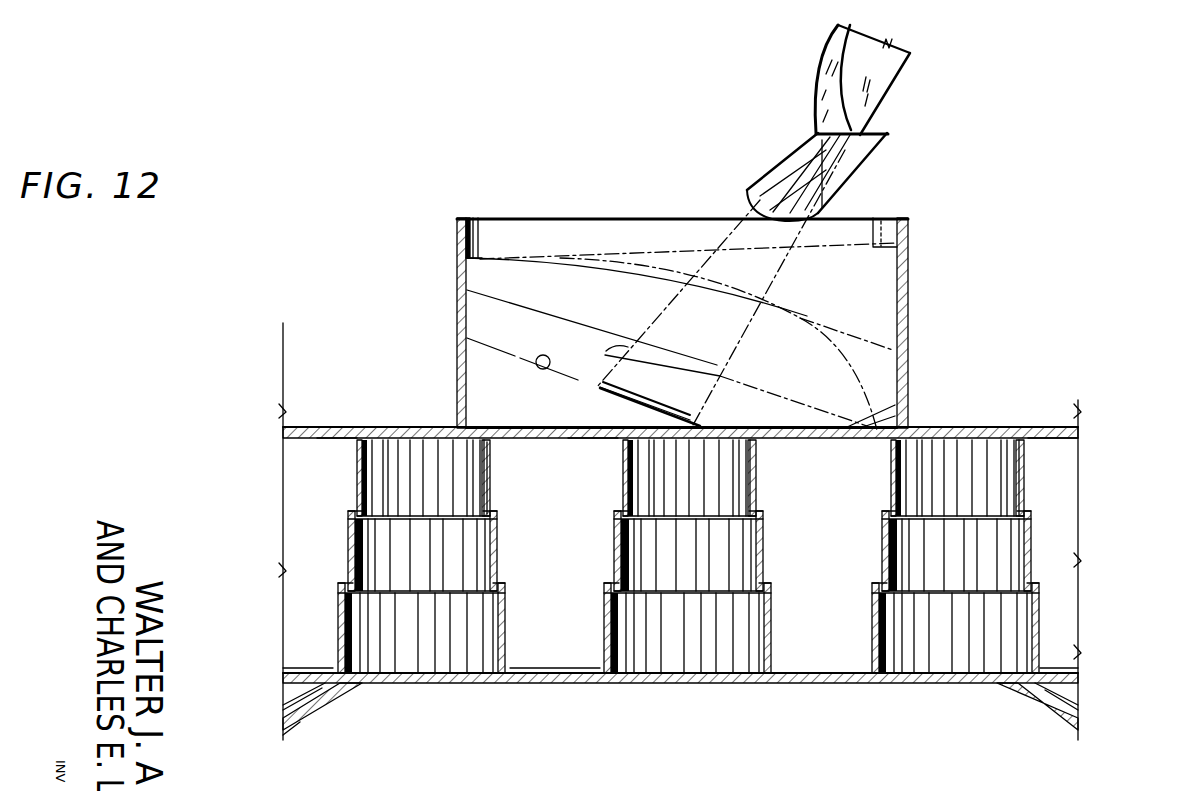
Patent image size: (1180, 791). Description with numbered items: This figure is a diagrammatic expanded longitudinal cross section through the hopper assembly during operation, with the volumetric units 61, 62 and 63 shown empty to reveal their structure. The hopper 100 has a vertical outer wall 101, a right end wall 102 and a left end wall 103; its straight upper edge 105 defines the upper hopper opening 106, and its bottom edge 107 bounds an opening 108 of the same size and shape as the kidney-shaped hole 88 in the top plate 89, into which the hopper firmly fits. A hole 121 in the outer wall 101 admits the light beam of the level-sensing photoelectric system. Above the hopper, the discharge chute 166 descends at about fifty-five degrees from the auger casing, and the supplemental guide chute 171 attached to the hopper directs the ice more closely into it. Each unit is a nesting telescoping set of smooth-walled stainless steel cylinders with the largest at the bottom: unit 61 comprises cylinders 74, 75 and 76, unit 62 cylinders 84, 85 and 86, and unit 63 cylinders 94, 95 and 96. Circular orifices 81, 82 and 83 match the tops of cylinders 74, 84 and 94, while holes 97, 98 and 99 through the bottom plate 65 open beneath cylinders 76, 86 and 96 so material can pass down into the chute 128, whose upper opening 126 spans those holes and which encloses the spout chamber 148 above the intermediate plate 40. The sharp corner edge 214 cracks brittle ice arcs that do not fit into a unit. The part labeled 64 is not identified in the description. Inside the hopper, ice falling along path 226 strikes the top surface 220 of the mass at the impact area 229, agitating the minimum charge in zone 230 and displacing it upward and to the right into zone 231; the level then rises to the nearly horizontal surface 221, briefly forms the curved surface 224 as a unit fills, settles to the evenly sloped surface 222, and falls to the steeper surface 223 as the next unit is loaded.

The intermediate plate 40 is at (565, 683).
The volumetric unit 61 is at (418, 556).
The volumetric unit 62 is at (951, 556).
The volumetric unit 63 is at (686, 556).
The support plate 64 is at (317, 443).
The bottom plate 65 is at (290, 668).
The top cylinder of unit 61 74 is at (356, 486).
The middle cylinder of unit 61 75 is at (347, 548).
The bottom cylinder of unit 61 76 is at (338, 625).
The circular orifice 81 is at (486, 444).
The circular orifice 82 is at (1000, 440).
The circular orifice 83 is at (733, 440).
The top cylinder of unit 62 84 is at (890, 471).
The middle cylinder of unit 62 85 is at (881, 543).
The bottom cylinder of unit 62 86 is at (872, 625).
The kidney-shaped hole 88 is at (893, 428).
The top plate 89 is at (355, 427).
The top cylinder of unit 63 94 is at (620, 468).
The middle cylinder of unit 63 95 is at (612, 550).
The bottom cylinder of unit 63 96 is at (604, 627).
The hole in bottom plate 97 is at (455, 671).
The hole in bottom plate 98 is at (985, 672).
The hole in bottom plate 99 is at (740, 672).
The hopper 100 is at (692, 270).
The vertical outer wall 101 is at (670, 218).
The right end wall 102 is at (907, 357).
The left end wall 103 is at (483, 348).
The upper edge 105 is at (494, 218).
The upper hopper opening 106 is at (545, 221).
The bottom edge 107 is at (897, 403).
The bottom opening 108 is at (905, 405).
The hole in outer wall 121 is at (543, 355).
The upper opening of chute 126 is at (280, 688).
The chute 128 is at (340, 690).
The spout chamber 148 is at (291, 697).
The discharge chute 166 is at (887, 82).
The supplemental guide chute 171 is at (862, 167).
The corner edge 214 is at (485, 482).
The lower ice surface 220 is at (513, 353).
The upper ice surface level 221 is at (617, 258).
The sloped ice surface 222 is at (820, 318).
The steeper ice surface 223 is at (562, 313).
The curved ice surface 224 is at (866, 420).
The ice path 226 is at (622, 353).
The impact area 229 is at (643, 399).
The minimum ice zone 230 is at (553, 404).
The displaced ice zone 231 is at (638, 304).